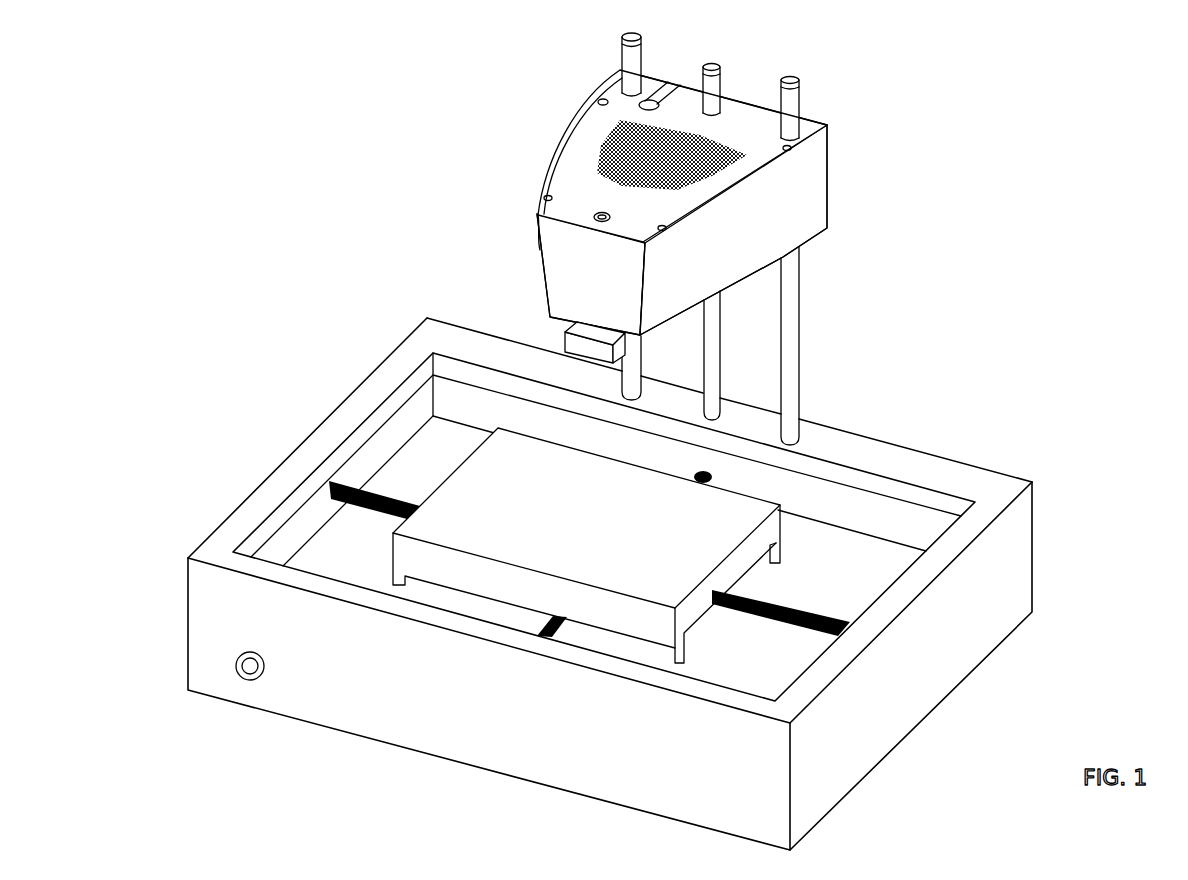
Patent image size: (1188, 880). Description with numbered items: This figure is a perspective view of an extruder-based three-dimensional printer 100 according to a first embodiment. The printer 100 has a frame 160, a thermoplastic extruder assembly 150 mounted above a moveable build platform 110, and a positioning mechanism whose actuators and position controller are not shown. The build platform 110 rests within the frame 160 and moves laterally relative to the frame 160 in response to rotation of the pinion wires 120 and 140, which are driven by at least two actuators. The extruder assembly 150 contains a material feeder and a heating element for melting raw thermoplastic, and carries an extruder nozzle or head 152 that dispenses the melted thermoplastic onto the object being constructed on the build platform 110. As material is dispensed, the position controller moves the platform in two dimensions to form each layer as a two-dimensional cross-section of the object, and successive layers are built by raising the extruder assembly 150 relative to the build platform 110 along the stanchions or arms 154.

The 3D printer 100 is at (348, 210).
The build platform 110 is at (601, 536).
The pinion wire 120 is at (565, 636).
The pinion wire 140 is at (786, 598).
The thermoplastic extruder assembly 150 is at (829, 169).
The extruder nozzle 152 is at (551, 332).
The stanchions 154 is at (650, 362).
The frame 160 is at (953, 450).